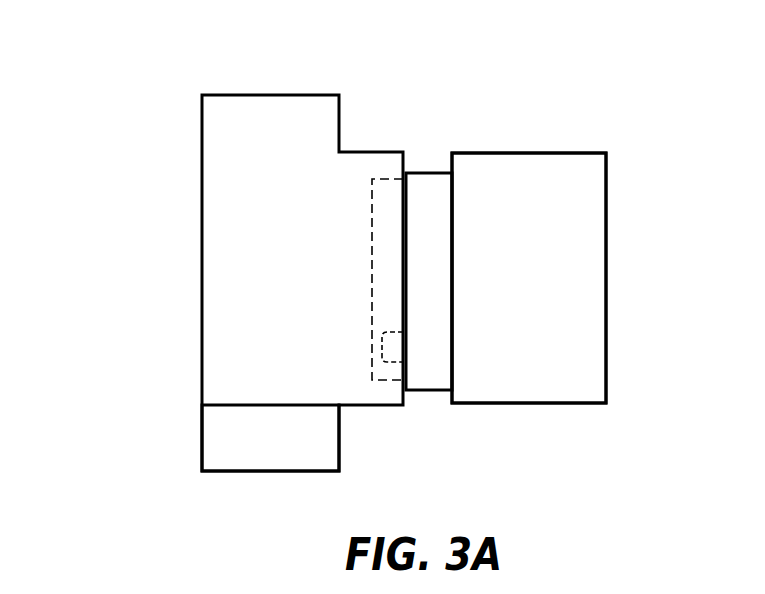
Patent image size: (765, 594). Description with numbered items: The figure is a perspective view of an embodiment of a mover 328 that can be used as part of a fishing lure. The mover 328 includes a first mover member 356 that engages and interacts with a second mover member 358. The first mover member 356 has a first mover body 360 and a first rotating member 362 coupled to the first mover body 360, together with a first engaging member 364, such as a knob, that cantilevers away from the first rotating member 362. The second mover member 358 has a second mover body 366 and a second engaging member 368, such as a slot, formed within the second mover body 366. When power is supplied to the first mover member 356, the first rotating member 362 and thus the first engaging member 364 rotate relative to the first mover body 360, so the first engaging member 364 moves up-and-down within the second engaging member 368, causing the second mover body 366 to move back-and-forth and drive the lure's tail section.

The mover 328 is at (148, 90).
The first mover member 356 is at (577, 331).
The second mover member 358 is at (234, 395).
The first mover body 360 is at (565, 222).
The first rotating member 362 is at (425, 184).
The first engaging member 364 is at (390, 350).
The second mover body 366 is at (234, 280).
The second engaging member 368 is at (378, 258).